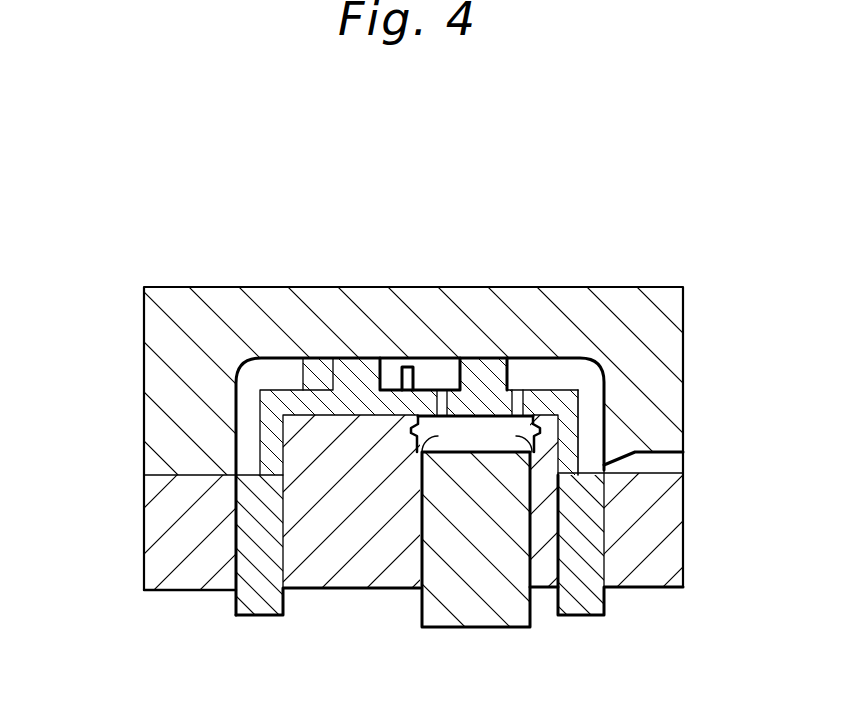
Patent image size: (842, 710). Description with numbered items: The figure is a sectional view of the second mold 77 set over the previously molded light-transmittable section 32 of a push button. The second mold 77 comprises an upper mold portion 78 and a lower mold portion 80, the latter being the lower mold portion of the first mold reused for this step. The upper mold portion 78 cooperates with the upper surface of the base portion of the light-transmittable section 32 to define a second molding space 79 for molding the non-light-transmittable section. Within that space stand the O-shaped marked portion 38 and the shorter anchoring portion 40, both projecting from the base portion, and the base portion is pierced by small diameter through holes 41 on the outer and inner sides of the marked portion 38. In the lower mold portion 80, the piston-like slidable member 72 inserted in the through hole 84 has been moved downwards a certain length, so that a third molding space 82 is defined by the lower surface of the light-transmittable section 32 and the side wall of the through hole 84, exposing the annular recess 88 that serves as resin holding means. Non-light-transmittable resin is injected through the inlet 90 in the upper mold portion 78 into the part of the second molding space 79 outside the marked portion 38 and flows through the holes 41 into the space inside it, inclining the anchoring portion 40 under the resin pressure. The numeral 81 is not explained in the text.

The second mold 77 is at (248, 242).
The upper mold portion 78 is at (143, 364).
The lower mold portion 80 is at (145, 528).
The marked portion 38 is at (490, 360).
The light-transmittable section 32 is at (303, 390).
The pocket 81 is at (438, 372).
The anchoring portion 40 is at (412, 365).
The small diameter through holes 41 is at (435, 407).
The second molding space 79 is at (577, 372).
The inlet 90 is at (653, 460).
The annular recess 88 is at (332, 588).
The piston-like slidable member 72 is at (472, 613).
The third molding space 82 is at (466, 440).
The through hole 84 is at (514, 440).